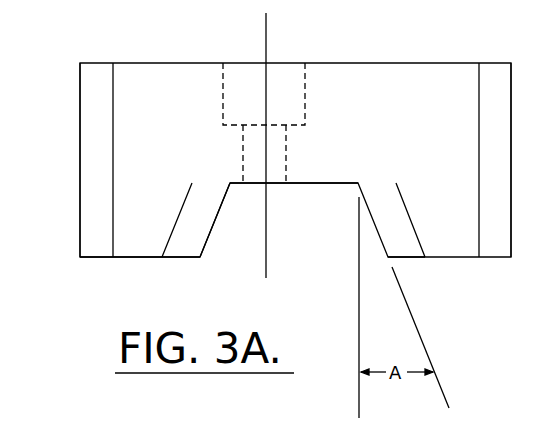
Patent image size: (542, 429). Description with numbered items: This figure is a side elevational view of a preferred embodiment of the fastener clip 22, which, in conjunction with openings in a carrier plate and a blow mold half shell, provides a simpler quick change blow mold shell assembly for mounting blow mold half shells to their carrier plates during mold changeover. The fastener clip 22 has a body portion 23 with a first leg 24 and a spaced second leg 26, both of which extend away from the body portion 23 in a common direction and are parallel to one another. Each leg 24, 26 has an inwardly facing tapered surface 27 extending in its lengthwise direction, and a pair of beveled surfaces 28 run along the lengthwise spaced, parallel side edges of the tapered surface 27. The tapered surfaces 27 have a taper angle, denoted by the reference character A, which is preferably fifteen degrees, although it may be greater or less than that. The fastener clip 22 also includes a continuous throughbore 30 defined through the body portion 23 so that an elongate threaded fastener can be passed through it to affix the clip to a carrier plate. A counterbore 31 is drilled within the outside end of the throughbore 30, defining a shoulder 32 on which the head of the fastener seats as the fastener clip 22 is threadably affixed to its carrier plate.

The fastener clip 22 is at (80, 128).
The body portion 23 is at (393, 88).
The first leg 24 is at (137, 257).
The second leg 26 is at (454, 257).
The tapered surface 27 is at (213, 225).
The beveled surfaces 28 is at (182, 257).
The throughbore 30 is at (276, 175).
The counterbore 31 is at (278, 80).
The shoulder 32 is at (233, 127).